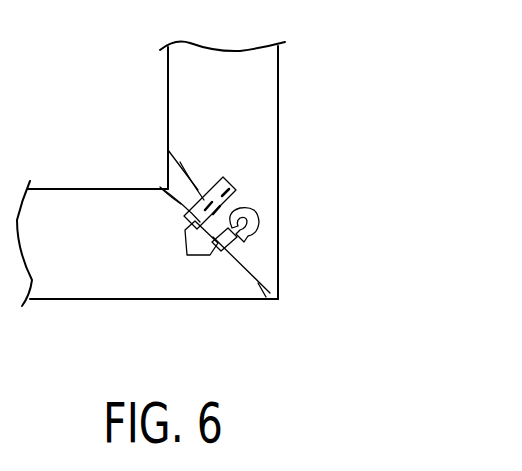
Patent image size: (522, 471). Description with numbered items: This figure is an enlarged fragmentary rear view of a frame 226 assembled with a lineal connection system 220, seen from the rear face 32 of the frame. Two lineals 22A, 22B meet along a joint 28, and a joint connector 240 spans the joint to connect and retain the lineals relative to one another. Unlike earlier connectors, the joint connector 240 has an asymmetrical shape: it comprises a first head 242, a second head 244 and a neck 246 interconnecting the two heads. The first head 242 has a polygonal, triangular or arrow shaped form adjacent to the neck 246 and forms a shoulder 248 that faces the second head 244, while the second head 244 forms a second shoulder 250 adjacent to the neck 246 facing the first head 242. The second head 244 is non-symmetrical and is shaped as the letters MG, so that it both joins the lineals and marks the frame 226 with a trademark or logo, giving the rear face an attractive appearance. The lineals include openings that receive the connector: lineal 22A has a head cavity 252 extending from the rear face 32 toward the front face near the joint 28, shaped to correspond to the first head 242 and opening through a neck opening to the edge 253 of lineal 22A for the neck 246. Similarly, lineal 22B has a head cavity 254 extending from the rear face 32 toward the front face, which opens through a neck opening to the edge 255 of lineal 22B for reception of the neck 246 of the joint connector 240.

The lineal 22A is at (48, 300).
The lineal 22B is at (280, 60).
The frame 226 is at (292, 103).
The rear face 32 is at (292, 156).
The joint connector 240 is at (211, 174).
The second shoulder 250 is at (190, 196).
The edge 255 is at (180, 200).
The second head 244 is at (243, 191).
The neck 246 is at (185, 226).
The shoulder 248 is at (190, 242).
The lineal connection system 220 is at (294, 238).
The head cavity 254 is at (258, 233).
The joint 28 is at (282, 292).
The head cavity 252 is at (192, 258).
The first head 242 is at (200, 258).
The edge 253 is at (257, 290).